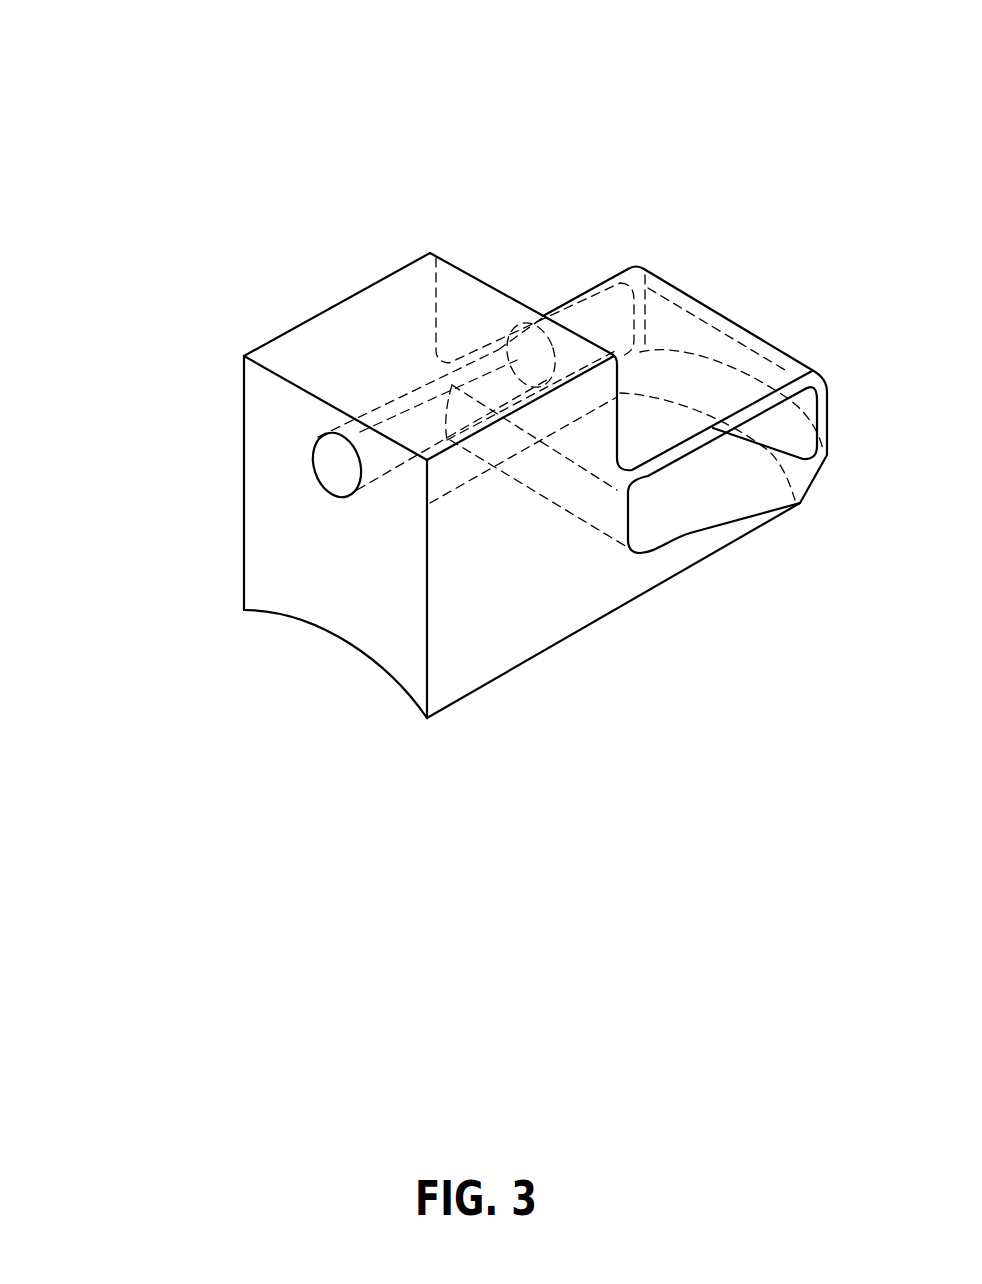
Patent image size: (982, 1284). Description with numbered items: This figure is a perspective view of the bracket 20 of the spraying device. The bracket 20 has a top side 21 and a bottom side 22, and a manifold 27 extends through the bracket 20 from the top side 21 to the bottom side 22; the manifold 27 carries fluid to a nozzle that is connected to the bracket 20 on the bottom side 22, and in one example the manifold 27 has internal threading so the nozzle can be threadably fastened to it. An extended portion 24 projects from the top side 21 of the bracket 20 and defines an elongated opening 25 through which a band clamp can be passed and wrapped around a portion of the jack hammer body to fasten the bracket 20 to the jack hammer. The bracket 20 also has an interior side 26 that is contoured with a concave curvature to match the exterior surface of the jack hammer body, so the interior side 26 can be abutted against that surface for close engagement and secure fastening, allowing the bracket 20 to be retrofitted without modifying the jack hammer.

The bracket 20 is at (734, 152).
The top side 21 is at (485, 280).
The bottom side 22 is at (268, 530).
The extended portion 24 is at (702, 313).
The elongated opening 25 is at (685, 495).
The interior side 26 is at (355, 648).
The manifold 27 is at (336, 461).